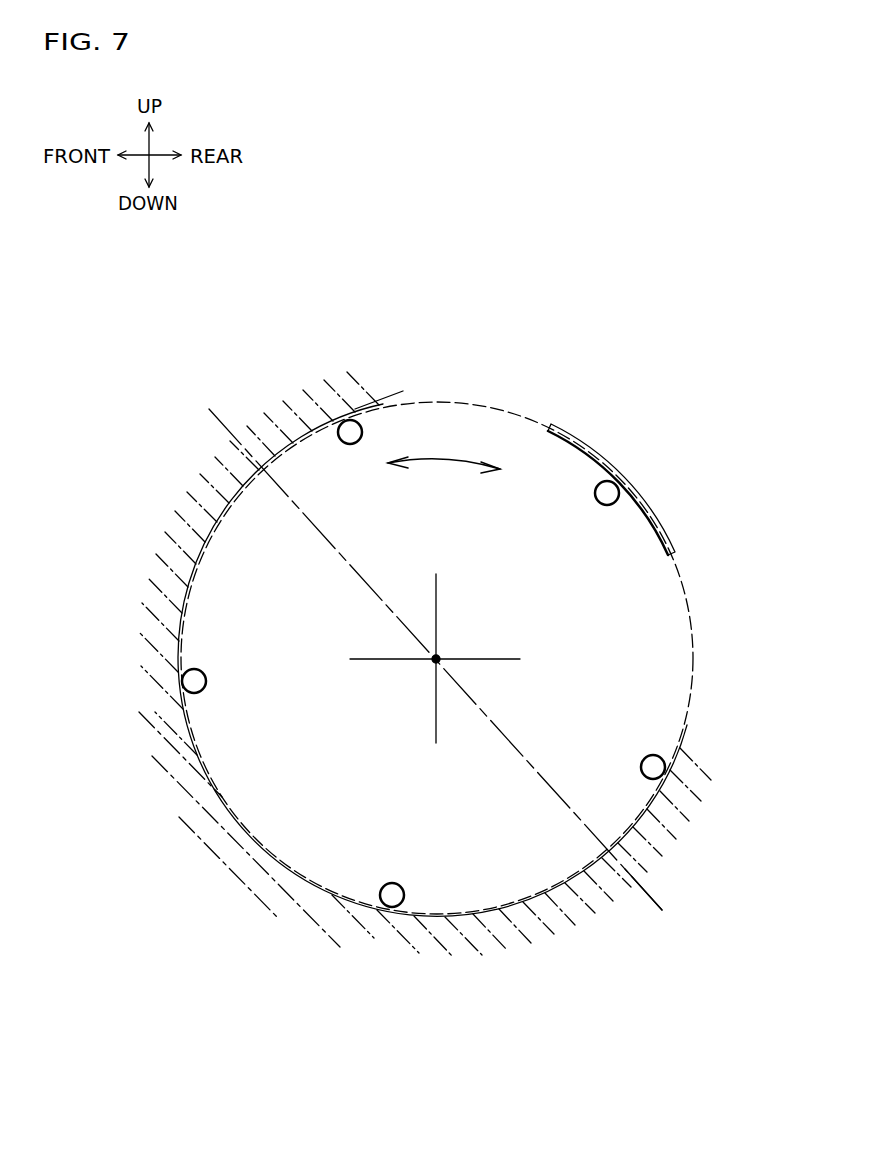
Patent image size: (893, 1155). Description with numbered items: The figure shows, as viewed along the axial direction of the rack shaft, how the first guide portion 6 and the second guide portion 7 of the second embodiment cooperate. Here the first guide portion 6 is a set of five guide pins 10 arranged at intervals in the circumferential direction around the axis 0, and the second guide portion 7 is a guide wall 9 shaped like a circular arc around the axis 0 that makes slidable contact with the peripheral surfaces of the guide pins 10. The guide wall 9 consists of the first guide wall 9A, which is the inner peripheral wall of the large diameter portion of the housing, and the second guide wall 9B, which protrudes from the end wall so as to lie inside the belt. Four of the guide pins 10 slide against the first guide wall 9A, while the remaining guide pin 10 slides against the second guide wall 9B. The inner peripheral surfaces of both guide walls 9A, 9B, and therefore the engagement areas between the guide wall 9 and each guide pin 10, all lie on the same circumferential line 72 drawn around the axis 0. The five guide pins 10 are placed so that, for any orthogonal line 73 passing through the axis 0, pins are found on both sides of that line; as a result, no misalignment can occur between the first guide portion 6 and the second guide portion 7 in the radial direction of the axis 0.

The guide pins 10 is at (420, 660).
The first guide portion 6 is at (350, 432).
The first guide wall 9A is at (389, 665).
The second guide wall 9B is at (644, 484).
The guide wall 9 is at (172, 610).
The second guide portion 7 is at (620, 475).
The circumferential line 72 is at (693, 664).
The orthogonal line 73 is at (653, 895).
The axis 0 is at (438, 658).